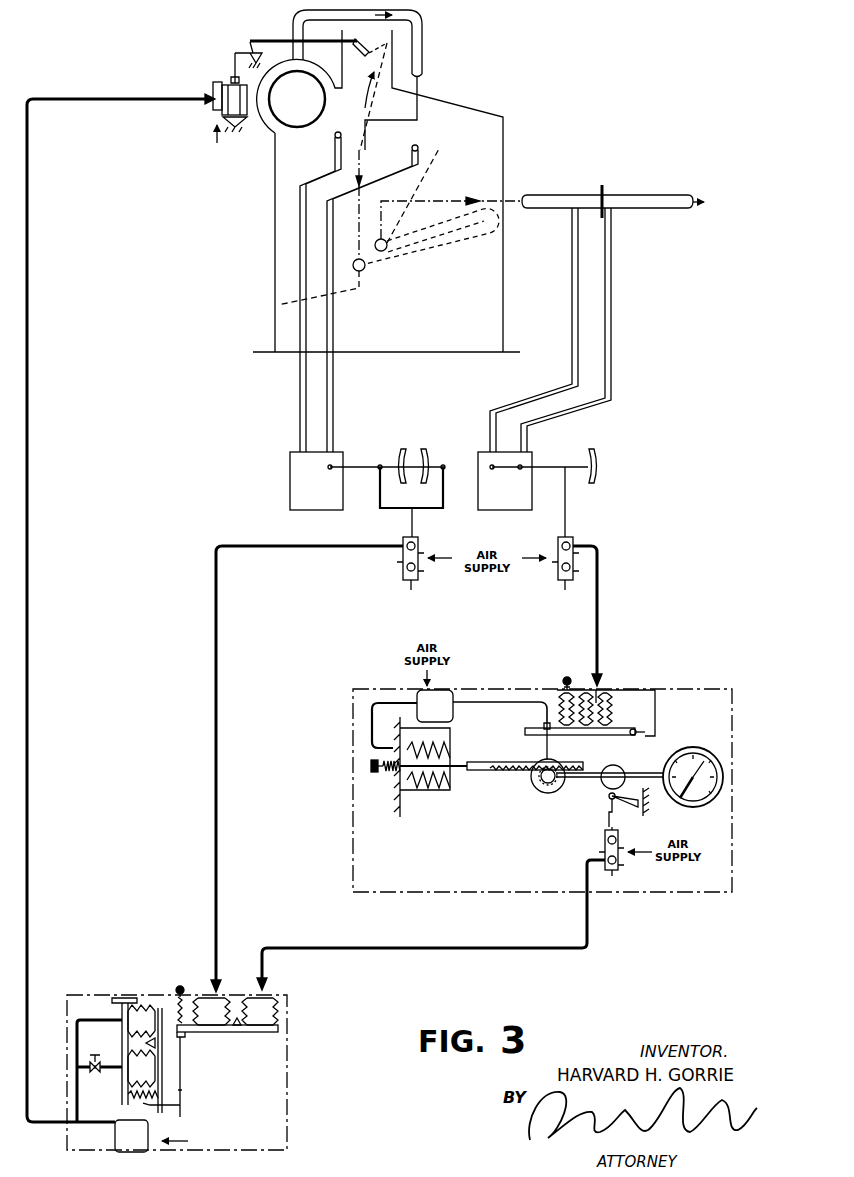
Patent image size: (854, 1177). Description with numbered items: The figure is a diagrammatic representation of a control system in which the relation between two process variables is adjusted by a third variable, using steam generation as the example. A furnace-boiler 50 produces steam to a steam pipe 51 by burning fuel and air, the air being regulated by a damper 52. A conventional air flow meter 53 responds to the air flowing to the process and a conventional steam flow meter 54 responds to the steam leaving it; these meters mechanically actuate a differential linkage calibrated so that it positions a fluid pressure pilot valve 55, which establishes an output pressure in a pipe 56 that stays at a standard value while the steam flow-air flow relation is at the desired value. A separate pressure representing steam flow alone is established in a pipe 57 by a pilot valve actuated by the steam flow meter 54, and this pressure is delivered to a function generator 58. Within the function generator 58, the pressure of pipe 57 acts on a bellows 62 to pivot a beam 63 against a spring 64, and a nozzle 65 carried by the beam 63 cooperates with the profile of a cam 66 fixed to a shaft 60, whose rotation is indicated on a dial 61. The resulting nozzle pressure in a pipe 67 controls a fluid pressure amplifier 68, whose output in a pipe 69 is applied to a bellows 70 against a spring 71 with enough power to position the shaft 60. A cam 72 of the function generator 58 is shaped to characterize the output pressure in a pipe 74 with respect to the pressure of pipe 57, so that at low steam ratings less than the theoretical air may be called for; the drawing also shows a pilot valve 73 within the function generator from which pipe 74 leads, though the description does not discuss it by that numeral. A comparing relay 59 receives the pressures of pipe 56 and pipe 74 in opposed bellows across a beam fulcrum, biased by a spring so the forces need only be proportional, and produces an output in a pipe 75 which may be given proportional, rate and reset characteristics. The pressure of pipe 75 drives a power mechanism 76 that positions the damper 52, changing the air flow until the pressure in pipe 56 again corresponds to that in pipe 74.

The furnace-boiler 50 is at (425, 324).
The steam pipe 51 is at (424, 44).
The damper 52 is at (356, 62).
The air flow meter 53 is at (290, 452).
The steam flow meter 54 is at (483, 452).
The fluid pressure pilot valve 55 is at (403, 580).
The pipe 56 is at (217, 610).
The pipe 57 is at (599, 636).
The function generator 58 is at (709, 689).
The comparing relay 59 is at (88, 995).
The shaft 60 is at (592, 773).
The dial 61 is at (689, 747).
The bellows 62 is at (617, 700).
The beam 63 is at (613, 737).
The spring 64 is at (558, 705).
The nozzle 65 is at (542, 748).
The cam 66 is at (548, 794).
The pipe 67 is at (497, 702).
The fluid pressure amplifier 68 is at (435, 706).
The pipe 69 is at (372, 721).
The bellows 70 is at (422, 792).
The spring 71 is at (400, 780).
The cam 72 is at (598, 792).
The pilot valve 73 is at (620, 866).
The pipe 74 is at (426, 947).
The pipe 75 is at (28, 536).
The power mechanism 76 is at (215, 82).